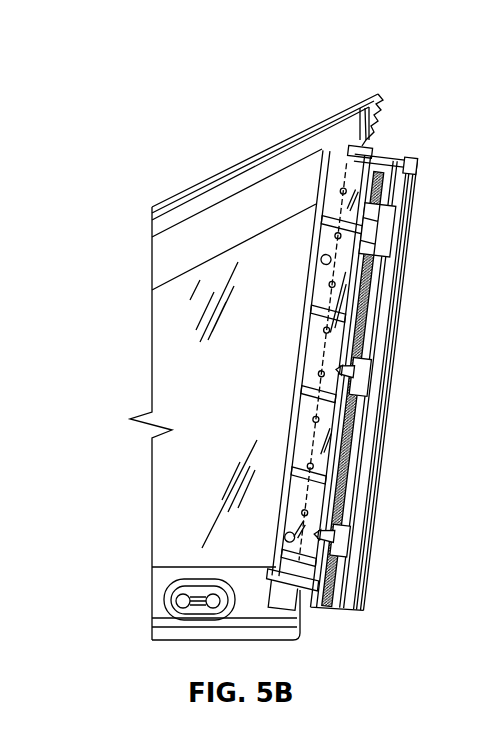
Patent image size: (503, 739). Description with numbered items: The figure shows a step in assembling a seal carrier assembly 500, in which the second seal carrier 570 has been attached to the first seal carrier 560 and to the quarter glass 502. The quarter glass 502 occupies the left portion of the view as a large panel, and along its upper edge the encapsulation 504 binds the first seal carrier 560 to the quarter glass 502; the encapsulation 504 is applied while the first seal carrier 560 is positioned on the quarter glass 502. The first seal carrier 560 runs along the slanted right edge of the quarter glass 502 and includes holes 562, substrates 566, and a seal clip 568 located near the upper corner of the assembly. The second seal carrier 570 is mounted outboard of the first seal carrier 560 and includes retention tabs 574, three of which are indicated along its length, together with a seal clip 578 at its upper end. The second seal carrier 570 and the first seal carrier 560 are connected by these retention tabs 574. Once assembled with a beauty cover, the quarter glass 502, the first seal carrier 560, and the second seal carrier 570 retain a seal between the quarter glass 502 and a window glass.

The seal carrier assembly 500 is at (314, 76).
The quarter glass 502 is at (262, 375).
The encapsulation 504 is at (152, 205).
The first seal carrier 560 is at (281, 481).
The holes 562 is at (322, 263).
The substrates 566 is at (328, 222).
The seal clip 568 is at (372, 140).
The second seal carrier 570 is at (418, 158).
The retention tabs 574 is at (398, 238).
The seal clip 578 is at (405, 150).